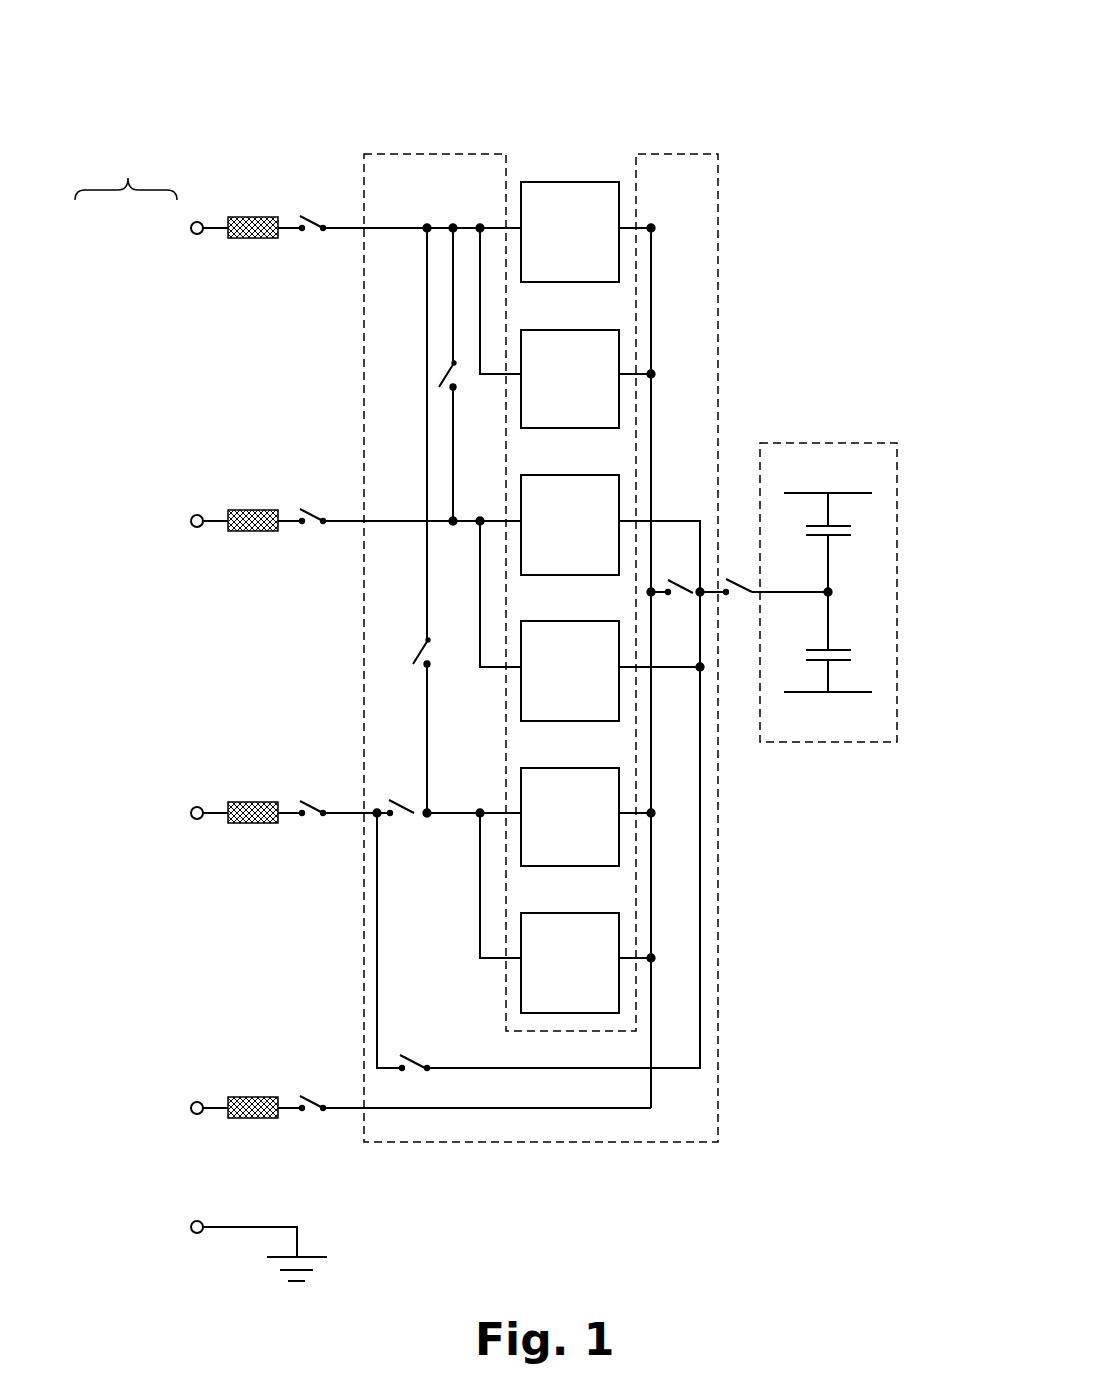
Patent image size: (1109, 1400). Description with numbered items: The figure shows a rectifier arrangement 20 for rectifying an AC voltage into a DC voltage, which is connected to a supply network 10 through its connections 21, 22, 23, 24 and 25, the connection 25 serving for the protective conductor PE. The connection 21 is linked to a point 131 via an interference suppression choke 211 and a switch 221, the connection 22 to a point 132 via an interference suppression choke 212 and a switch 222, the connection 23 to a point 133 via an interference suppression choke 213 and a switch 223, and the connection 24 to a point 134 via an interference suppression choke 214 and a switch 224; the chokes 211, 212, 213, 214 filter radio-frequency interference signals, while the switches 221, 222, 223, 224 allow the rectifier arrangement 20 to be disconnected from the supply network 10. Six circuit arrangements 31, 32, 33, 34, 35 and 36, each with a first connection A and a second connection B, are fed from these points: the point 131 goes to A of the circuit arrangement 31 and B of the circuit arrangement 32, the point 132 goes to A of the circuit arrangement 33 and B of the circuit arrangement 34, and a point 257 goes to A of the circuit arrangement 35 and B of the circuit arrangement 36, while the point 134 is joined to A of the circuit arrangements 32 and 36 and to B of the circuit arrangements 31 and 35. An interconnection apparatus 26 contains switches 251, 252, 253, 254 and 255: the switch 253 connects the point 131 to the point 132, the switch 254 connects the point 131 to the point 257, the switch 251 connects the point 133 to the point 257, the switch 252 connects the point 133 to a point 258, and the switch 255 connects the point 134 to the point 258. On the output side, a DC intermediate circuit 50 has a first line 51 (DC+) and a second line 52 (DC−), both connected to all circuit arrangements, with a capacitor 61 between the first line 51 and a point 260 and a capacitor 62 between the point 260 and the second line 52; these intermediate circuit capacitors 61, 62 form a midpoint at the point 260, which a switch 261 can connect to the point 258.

The supply network 10 is at (128, 178).
The rectifier arrangement 20 is at (789, 100).
The connection 21 is at (199, 221).
The connection 22 is at (199, 514).
The connection 23 is at (199, 806).
The connection 24 is at (199, 1101).
The connection 25 is at (197, 1221).
The interconnection apparatus 26 is at (465, 154).
The circuit arrangement 31 is at (572, 182).
The circuit arrangement 32 is at (530, 330).
The circuit arrangement 33 is at (530, 475).
The circuit arrangement 34 is at (530, 621).
The circuit arrangement 35 is at (530, 768).
The circuit arrangement 36 is at (530, 913).
The DC intermediate circuit 50 is at (905, 452).
The first line 51 is at (840, 493).
The second line 52 is at (840, 693).
The capacitor 61 is at (845, 535).
The capacitor 62 is at (845, 660).
The point 131 is at (388, 228).
The point 132 is at (400, 521).
The point 133 is at (377, 813).
The point 134 is at (364, 1110).
The interference suppression choke 211 is at (252, 217).
The interference suppression choke 212 is at (245, 510).
The interference suppression choke 213 is at (245, 802).
The interference suppression choke 214 is at (245, 1097).
The switch 221 is at (318, 213).
The switch 222 is at (318, 506).
The switch 223 is at (318, 798).
The switch 224 is at (318, 1093).
The switch 251 is at (400, 806).
The switch 252 is at (403, 1056).
The switch 253 is at (440, 377).
The switch 254 is at (414, 658).
The switch 255 is at (682, 588).
The point 257 is at (427, 815).
The point 258 is at (700, 792).
The point 260 is at (830, 592).
The switch 261 is at (737, 588).